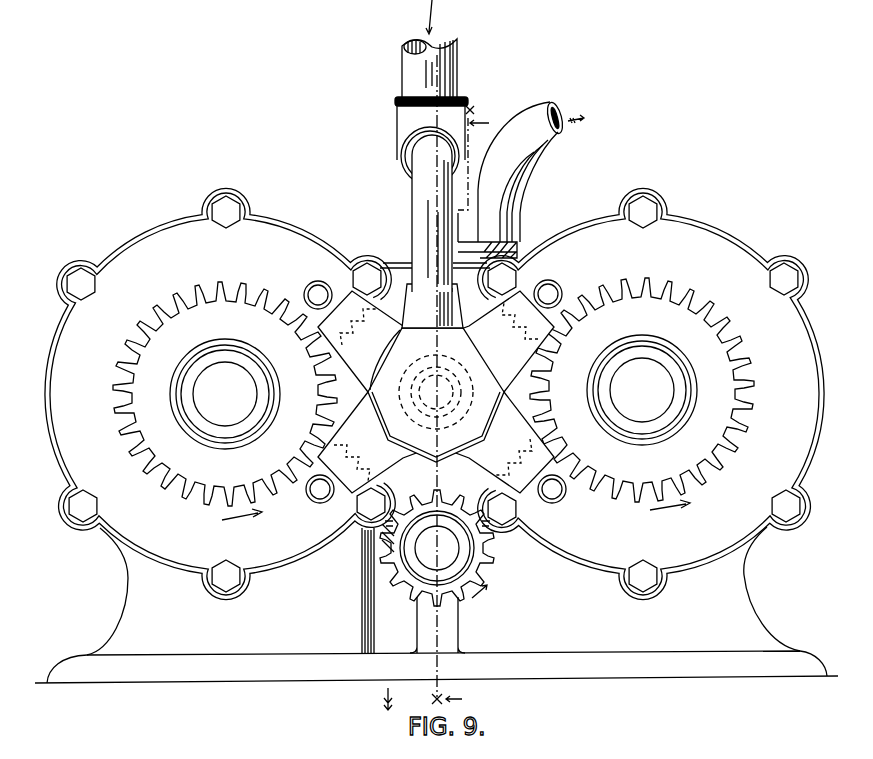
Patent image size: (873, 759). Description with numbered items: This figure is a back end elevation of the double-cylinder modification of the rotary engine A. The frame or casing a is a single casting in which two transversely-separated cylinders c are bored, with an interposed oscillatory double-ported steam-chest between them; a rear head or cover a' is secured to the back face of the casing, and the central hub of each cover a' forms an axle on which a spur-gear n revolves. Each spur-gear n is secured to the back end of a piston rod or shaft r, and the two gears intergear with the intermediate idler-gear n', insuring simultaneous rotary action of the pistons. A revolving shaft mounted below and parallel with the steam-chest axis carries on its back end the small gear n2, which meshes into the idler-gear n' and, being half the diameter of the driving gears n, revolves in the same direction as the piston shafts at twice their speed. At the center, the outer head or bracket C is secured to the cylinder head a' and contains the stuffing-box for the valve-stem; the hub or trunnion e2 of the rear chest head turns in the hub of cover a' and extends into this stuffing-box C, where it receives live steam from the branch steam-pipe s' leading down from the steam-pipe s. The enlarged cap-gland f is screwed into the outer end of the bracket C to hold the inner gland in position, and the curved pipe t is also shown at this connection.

The rotary engine A is at (433, 387).
The frame or casing a is at (436, 603).
The rear head or cover a' is at (434, 394).
The cylinder c is at (112, 250).
The spur-gear n is at (433, 399).
The piston rod or shaft r is at (433, 392).
The outer head or bracket C is at (435, 391).
The cap-gland f is at (390, 423).
The hub or trunnion e2 is at (436, 395).
The steam-pipe s is at (422, 92).
The branch steam-pipe s' is at (423, 231).
The curved discharge pipe t is at (533, 112).
The intermediate idler-gear n' is at (437, 532).
The small gear n2 is at (492, 563).